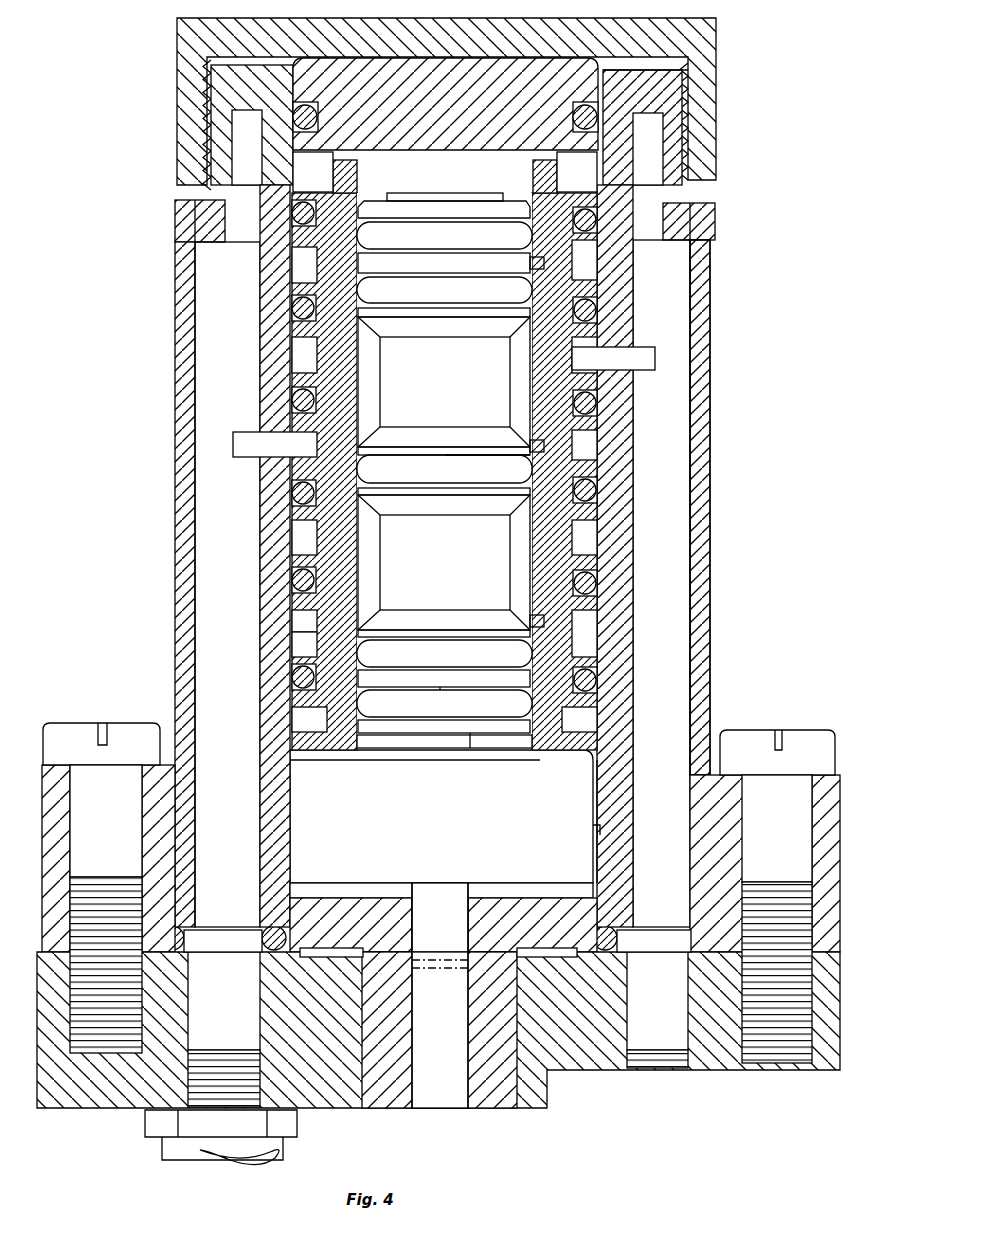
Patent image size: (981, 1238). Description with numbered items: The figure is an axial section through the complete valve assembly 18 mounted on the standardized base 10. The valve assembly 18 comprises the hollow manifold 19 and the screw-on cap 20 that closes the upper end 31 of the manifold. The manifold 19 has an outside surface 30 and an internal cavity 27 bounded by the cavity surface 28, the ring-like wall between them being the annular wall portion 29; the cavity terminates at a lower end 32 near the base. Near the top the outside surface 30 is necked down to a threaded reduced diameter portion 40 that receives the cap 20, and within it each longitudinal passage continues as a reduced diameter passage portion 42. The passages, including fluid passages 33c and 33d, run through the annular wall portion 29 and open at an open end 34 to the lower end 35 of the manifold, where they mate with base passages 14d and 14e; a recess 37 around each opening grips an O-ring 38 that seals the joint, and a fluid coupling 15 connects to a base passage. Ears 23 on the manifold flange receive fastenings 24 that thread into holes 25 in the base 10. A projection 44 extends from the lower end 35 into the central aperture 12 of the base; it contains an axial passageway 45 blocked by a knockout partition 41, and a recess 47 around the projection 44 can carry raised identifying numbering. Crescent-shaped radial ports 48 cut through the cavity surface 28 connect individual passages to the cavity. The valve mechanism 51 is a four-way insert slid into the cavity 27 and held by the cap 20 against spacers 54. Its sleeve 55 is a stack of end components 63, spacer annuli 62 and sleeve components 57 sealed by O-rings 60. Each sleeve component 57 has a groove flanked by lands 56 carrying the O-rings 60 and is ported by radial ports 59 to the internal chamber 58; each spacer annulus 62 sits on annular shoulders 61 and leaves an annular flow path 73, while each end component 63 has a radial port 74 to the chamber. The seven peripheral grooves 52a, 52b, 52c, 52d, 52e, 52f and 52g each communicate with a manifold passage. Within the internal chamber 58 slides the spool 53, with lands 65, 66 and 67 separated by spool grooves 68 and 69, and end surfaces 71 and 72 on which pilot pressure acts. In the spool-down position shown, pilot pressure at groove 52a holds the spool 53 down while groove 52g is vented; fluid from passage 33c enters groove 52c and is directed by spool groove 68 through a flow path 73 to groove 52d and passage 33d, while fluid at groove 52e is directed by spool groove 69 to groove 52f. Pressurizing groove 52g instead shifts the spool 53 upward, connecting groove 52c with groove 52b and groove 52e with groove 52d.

The base 10 is at (65, 1110).
The central aperture 12 is at (350, 1112).
The base passage 14d is at (224, 1059).
The base passage 14e is at (657, 1039).
The fluid coupling 15 is at (205, 1158).
The valve assembly 18 is at (120, 58).
The manifold 19 is at (712, 470).
The cap 20 is at (716, 36).
The ear 23 is at (170, 795).
The fastening 24 is at (441, 823).
The hole 25 is at (120, 1055).
The internal cavity 27 is at (597, 800).
The cavity surface 28 is at (600, 830).
The annular wall portion 29 is at (705, 515).
The outside surface 30 is at (177, 495).
The upper end 31 is at (690, 72).
The lower end 32 is at (490, 897).
The fluid passage 33c is at (685, 412).
The fluid passage 33d is at (188, 540).
The open end 34 is at (438, 1001).
The lower end 35 is at (330, 898).
The recess 37 is at (172, 925).
The O-ring 38 is at (205, 948).
The reduced diameter portion 40 is at (648, 138).
The knockout partition 41 is at (425, 980).
The reduced diameter passage portion 42 is at (228, 125).
The projection 44 is at (385, 1112).
The passageway 45 is at (440, 995).
The recess 47 is at (525, 935).
The radial port 48 is at (238, 457).
The valve mechanism 51 is at (434, 138).
The peripheral groove 52a is at (565, 176).
The peripheral groove 52b is at (590, 262).
The peripheral groove 52c is at (585, 345).
The peripheral groove 52d is at (590, 445).
The peripheral groove 52e is at (590, 525).
The peripheral groove 52f is at (590, 627).
The peripheral groove 52g is at (610, 748).
The spool 53 is at (470, 740).
The spacer 54 is at (444, 470).
The sleeve 55 is at (355, 775).
The land 56 is at (296, 345).
The sleeve component 57 is at (545, 330).
The internal chamber 58 is at (380, 200).
The radial port 59 is at (305, 645).
The O-ring 60 is at (300, 310).
The annular shoulder 61 is at (355, 276).
The spacer annulus 62 is at (290, 258).
The end component 63 is at (307, 186).
The land 65 is at (444, 470).
The land 66 is at (445, 455).
The land 67 is at (440, 700).
The spool groove 68 is at (373, 385).
The spool groove 69 is at (373, 560).
The upper end surface 71 is at (455, 196).
The lower end surface 72 is at (490, 750).
The flow path 73 is at (530, 265).
The radial port 74 is at (352, 162).